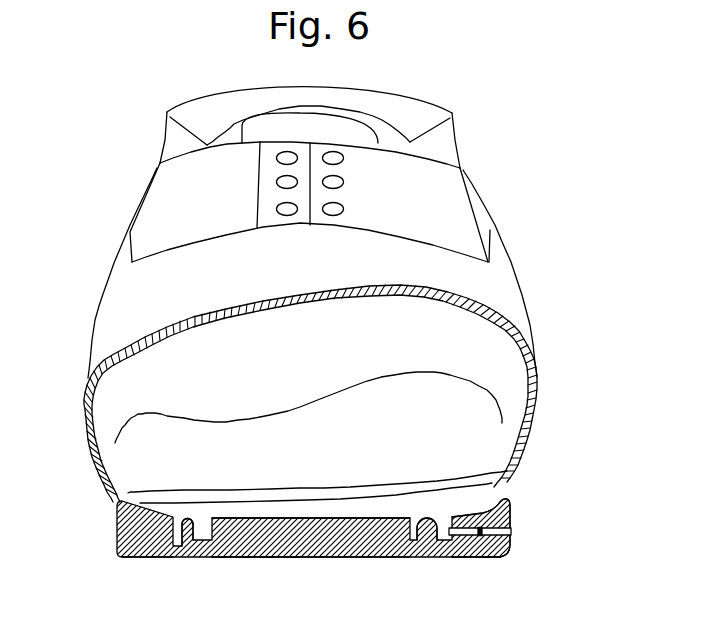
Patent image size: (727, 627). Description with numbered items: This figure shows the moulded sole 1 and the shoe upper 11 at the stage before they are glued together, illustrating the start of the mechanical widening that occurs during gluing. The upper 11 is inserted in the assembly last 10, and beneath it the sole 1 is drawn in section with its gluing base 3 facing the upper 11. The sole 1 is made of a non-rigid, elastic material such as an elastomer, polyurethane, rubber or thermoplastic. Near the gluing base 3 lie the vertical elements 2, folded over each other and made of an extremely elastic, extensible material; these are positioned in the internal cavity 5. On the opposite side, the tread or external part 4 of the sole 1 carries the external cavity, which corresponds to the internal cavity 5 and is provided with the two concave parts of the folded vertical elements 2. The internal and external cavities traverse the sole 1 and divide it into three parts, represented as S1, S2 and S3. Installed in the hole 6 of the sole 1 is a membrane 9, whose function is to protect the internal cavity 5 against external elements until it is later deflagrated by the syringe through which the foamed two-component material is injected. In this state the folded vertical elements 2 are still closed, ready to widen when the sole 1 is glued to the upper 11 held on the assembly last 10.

The sole 1 is at (116, 546).
The vertical elements 2 is at (190, 520).
The gluing base 3 is at (146, 512).
The tread or external part 4 is at (320, 557).
The internal cavity 5 is at (467, 517).
The hole 6 is at (511, 532).
The membrane 9 is at (480, 537).
The assembly last 10 is at (480, 340).
The upper 11 is at (480, 200).
The first sole part S1 is at (145, 538).
The second sole part S2 is at (283, 535).
The third sole part S3 is at (505, 548).